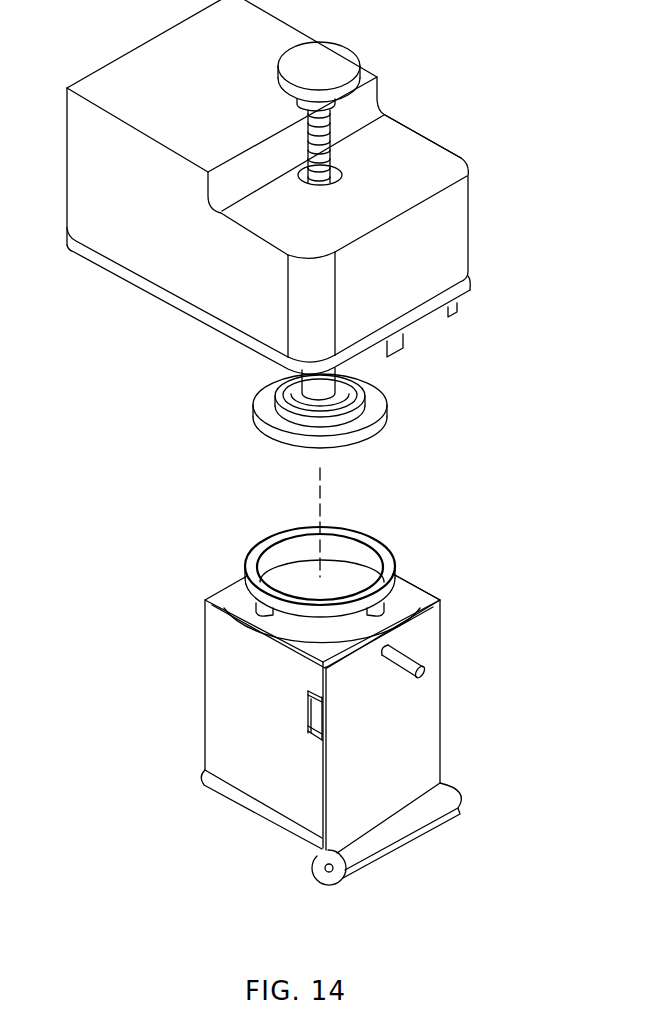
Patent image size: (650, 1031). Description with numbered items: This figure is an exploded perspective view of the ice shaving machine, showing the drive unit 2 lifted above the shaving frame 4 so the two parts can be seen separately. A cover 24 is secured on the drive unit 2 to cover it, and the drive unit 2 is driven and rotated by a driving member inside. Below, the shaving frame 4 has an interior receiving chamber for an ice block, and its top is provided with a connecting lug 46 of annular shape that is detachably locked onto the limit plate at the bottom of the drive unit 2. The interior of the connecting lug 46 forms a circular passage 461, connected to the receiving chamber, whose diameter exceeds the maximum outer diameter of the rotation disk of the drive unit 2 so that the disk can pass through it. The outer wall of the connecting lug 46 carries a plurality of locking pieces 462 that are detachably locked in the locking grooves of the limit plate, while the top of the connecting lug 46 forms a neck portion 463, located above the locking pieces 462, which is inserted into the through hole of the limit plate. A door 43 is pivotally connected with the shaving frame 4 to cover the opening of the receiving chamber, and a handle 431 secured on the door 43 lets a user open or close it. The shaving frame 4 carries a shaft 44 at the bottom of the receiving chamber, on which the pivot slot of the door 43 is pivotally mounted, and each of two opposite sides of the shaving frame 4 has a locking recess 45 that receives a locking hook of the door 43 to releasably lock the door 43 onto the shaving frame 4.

The drive unit 2 is at (183, 305).
The cover 24 is at (103, 233).
The shaving frame 4 is at (212, 728).
The door 43 is at (430, 705).
The handle 431 is at (425, 676).
The shaft 44 is at (408, 830).
The locking recess 45 is at (308, 723).
The connecting lug 46 is at (247, 598).
The passage 461 is at (343, 580).
The locking pieces 462 is at (260, 616).
The neck portion 463 is at (393, 590).